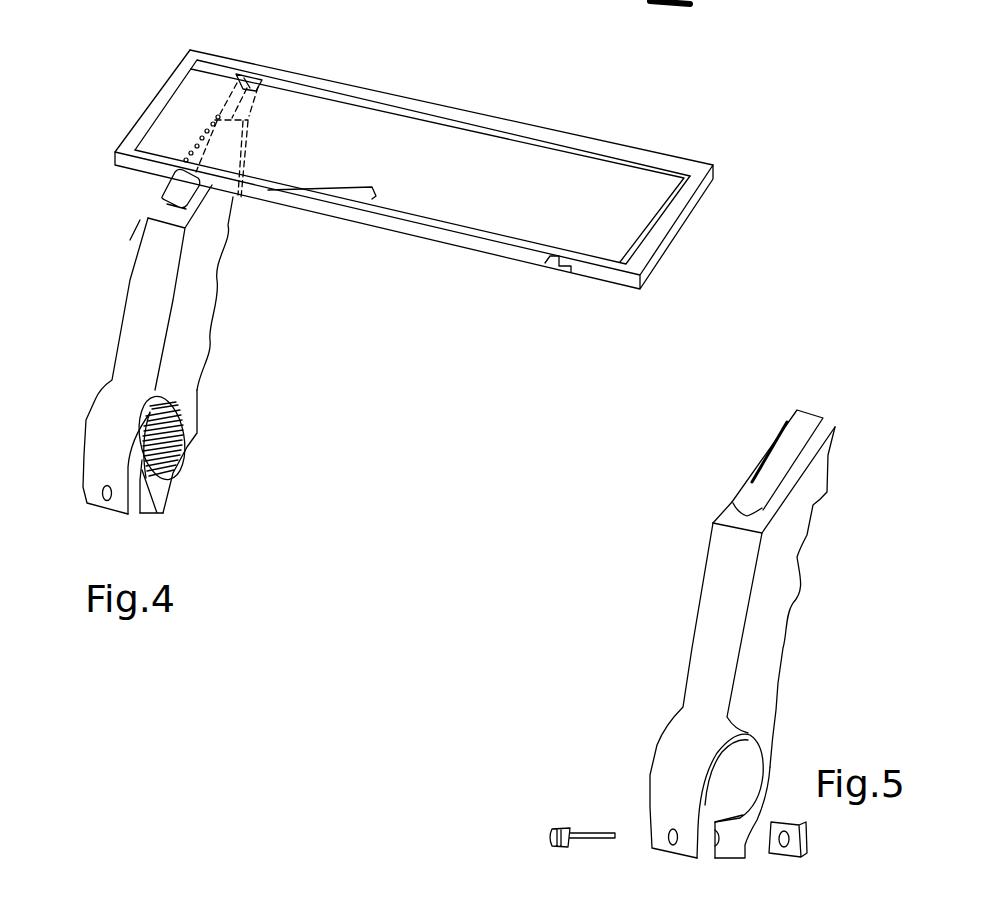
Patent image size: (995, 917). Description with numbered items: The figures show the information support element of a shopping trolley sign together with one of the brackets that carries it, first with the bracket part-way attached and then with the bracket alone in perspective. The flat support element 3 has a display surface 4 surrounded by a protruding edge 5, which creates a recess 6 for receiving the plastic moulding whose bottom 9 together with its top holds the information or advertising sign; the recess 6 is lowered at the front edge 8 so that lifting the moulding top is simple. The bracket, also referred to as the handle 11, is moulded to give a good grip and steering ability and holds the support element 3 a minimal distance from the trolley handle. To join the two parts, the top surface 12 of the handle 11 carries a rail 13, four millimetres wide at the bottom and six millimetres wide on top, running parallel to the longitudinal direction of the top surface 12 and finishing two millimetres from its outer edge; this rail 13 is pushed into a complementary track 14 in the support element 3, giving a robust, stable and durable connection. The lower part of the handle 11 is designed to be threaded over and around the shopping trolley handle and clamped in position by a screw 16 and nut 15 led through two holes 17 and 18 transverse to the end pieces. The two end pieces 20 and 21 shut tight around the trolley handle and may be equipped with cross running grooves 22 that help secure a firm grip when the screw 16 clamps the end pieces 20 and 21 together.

In FIG. 4, the support element 3 is at (714, 166).
In FIG. 4, the display surface 4 is at (560, 210).
In FIG. 4, the protruding edge 5 is at (187, 45).
In FIG. 4, the recess 6 is at (173, 85).
In FIG. 4, the front edge 8 is at (267, 192).
In FIG. 4, the plastic moulding bottom 9 is at (706, 7).
In FIG. 4, the handle 11 is at (178, 330).
In FIG. 5, the handle 11 is at (742, 634).
In FIG. 4, the top surface 12 is at (156, 219).
In FIG. 4, the rail 13 is at (156, 196).
In FIG. 4, the track 14 is at (254, 119).
In FIG. 5, the nut 15 is at (805, 850).
In FIG. 5, the screw 16 is at (582, 854).
In FIG. 4, the hole 17 is at (92, 504).
In FIG. 4, the hole 18 is at (151, 511).
In FIG. 4, the end piece 20 is at (181, 393).
In FIG. 4, the end piece 21 is at (133, 442).
In FIG. 4, the cross running grooves 22 is at (169, 458).